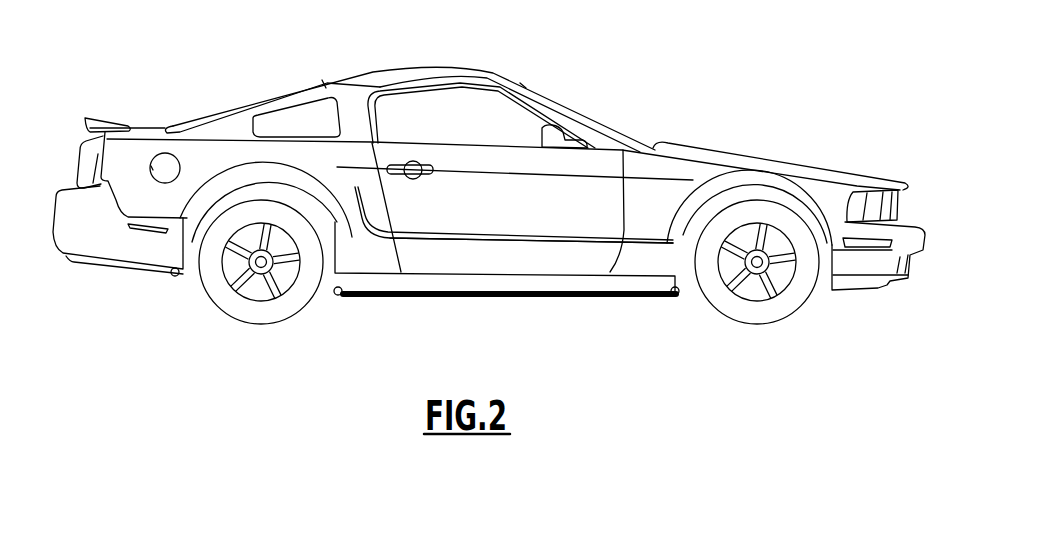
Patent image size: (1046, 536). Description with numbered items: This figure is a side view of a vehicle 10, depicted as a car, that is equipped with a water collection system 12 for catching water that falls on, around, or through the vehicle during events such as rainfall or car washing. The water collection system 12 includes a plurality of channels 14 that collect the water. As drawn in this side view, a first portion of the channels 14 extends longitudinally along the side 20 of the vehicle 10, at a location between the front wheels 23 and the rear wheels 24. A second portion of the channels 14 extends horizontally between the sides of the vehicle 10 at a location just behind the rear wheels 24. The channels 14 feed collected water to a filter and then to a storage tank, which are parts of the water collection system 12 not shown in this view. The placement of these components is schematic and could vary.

The vehicle 10 is at (680, 70).
The water collection system 12 is at (430, 303).
The channels 14 is at (172, 278).
The side 20 is at (504, 242).
The front wheels 23 is at (759, 273).
The rear wheels 24 is at (268, 296).